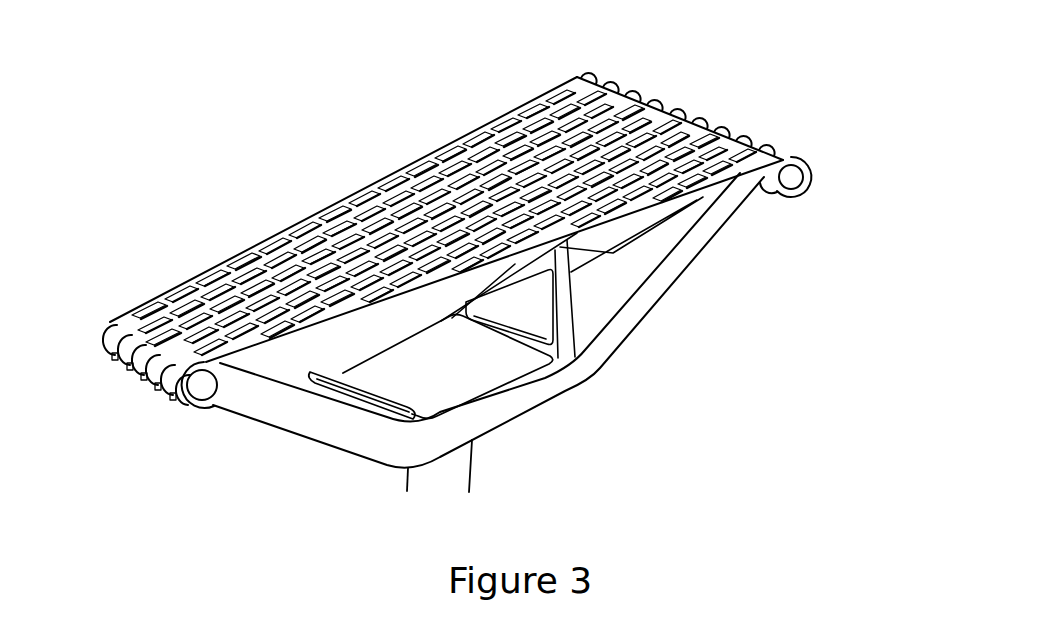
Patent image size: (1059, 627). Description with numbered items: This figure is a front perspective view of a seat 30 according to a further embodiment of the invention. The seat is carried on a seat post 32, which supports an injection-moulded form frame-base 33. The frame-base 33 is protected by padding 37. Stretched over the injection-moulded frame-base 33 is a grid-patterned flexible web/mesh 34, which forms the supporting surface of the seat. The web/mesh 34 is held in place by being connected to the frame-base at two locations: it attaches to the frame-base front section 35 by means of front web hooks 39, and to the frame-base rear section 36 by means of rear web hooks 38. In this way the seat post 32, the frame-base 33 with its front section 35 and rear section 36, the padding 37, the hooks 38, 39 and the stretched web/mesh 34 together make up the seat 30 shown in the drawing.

The seat 30 is at (657, 333).
The seat post 32 is at (475, 470).
The frame-base 33 is at (315, 445).
The flexible web/mesh 34 is at (270, 227).
The frame-base front section 35 is at (130, 380).
The frame-base rear section 36 is at (710, 117).
The padding 37 is at (493, 380).
The rear web hooks 38 is at (787, 147).
The front web hooks 39 is at (177, 403).